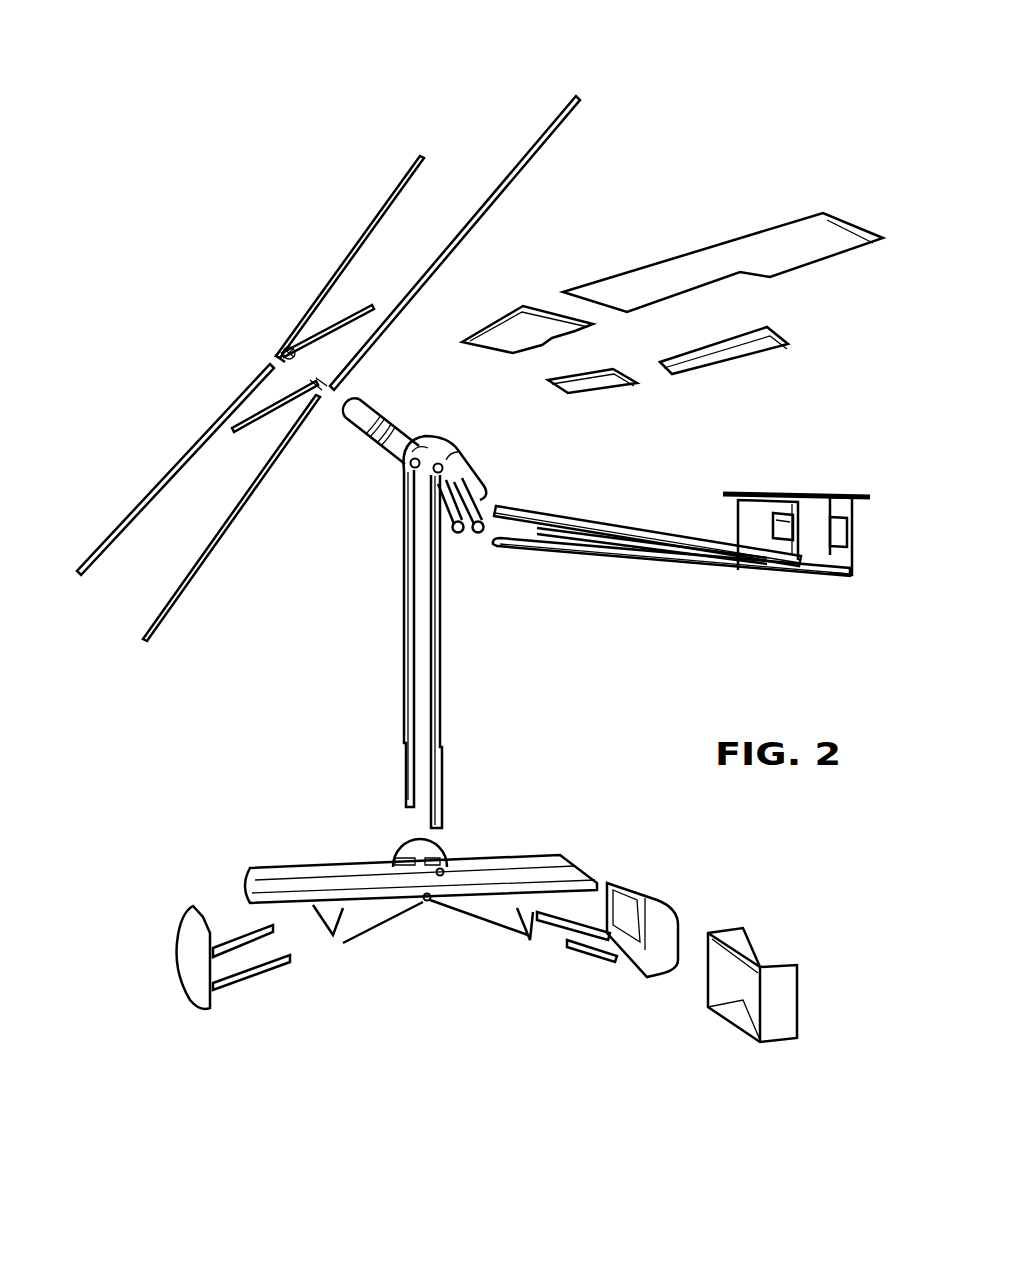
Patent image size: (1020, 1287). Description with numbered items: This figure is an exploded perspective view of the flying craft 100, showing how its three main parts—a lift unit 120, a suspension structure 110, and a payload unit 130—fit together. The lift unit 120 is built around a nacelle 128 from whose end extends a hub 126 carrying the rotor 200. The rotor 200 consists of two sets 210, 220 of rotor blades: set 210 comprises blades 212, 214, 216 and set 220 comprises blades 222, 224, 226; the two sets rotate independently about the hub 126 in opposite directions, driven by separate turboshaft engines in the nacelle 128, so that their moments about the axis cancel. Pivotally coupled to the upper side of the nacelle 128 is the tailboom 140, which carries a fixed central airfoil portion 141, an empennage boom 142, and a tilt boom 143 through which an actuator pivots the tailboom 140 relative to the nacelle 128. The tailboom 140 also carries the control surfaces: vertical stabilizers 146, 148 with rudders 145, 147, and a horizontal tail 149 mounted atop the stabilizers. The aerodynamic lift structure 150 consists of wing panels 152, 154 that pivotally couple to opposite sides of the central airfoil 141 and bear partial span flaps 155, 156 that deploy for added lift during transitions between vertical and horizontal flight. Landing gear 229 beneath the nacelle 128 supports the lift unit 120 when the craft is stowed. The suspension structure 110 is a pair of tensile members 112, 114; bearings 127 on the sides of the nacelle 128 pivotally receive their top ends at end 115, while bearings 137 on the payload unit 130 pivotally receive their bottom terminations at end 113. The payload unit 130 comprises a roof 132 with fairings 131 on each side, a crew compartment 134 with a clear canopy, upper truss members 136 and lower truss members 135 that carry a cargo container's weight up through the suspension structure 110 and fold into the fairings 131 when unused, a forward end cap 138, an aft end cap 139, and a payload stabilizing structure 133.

The flying craft 100 is at (130, 233).
The suspension structure 110 is at (355, 800).
The tensile member 112 is at (443, 658).
The end of suspension structure 113 is at (455, 815).
The tensile member 114 is at (406, 643).
The end of suspension structure 115 is at (465, 461).
The lift unit 120 is at (73, 663).
The hub 126 is at (365, 395).
The bearings 127 is at (412, 463).
The nacelle 128 is at (427, 420).
The landing gear 229 is at (478, 542).
The payload unit 130 is at (818, 1047).
The fairings 131 is at (563, 860).
The roof 132 is at (230, 887).
The payload stabilizing structure 133 is at (797, 940).
The crew compartment 134 is at (388, 853).
The lower truss members 135 is at (232, 996).
The upper truss members 136 is at (523, 940).
The bearings 137 is at (437, 898).
The forward end cap 138 is at (170, 960).
The aft end cap 139 is at (662, 898).
The tailboom 140 is at (860, 620).
The central airfoil portion 141 is at (563, 508).
The empennage boom 142 is at (677, 530).
The tilt boom 143 is at (570, 553).
The rudder 145 is at (830, 530).
The vertical stabilizer 146 is at (773, 510).
The rudder 147 is at (773, 523).
The vertical stabilizer 148 is at (737, 510).
The horizontal tail 149 is at (810, 490).
The aerodynamic lift structure 150 is at (443, 332).
The wing panel 152 is at (777, 273).
The wing panel 154 is at (570, 333).
The partial span flap 155 is at (735, 365).
The partial span flap 156 is at (592, 393).
The rotor 200 is at (68, 588).
The set of rotor blades 210 is at (605, 95).
The blade 212 is at (477, 207).
The blade 214 is at (263, 486).
The blade 216 is at (248, 432).
The set of rotor blades 220 is at (432, 128).
The blade 222 is at (340, 262).
The blade 224 is at (362, 306).
The blade 226 is at (167, 483).